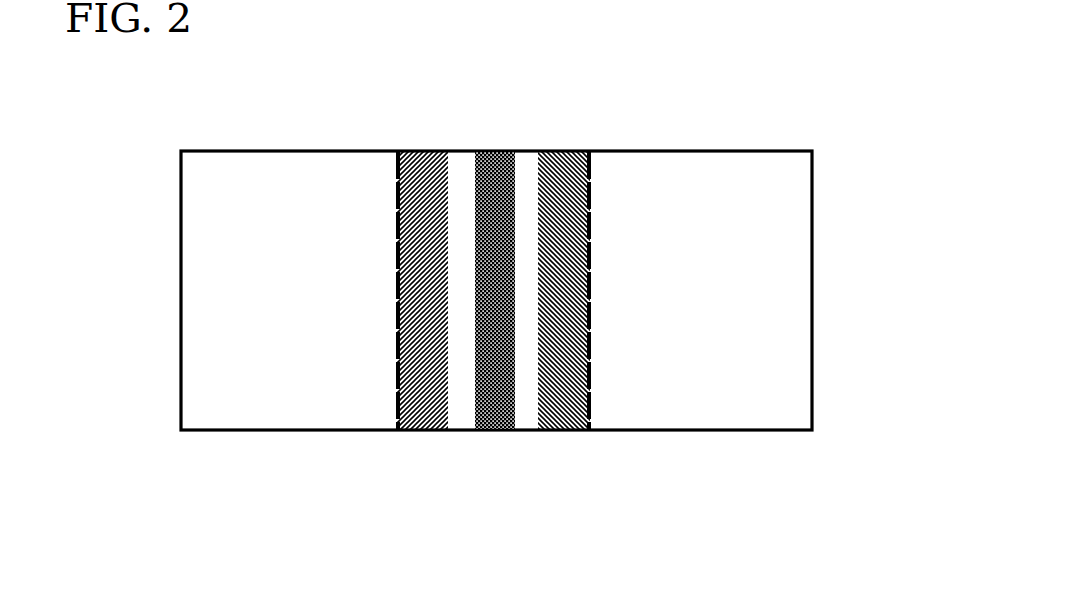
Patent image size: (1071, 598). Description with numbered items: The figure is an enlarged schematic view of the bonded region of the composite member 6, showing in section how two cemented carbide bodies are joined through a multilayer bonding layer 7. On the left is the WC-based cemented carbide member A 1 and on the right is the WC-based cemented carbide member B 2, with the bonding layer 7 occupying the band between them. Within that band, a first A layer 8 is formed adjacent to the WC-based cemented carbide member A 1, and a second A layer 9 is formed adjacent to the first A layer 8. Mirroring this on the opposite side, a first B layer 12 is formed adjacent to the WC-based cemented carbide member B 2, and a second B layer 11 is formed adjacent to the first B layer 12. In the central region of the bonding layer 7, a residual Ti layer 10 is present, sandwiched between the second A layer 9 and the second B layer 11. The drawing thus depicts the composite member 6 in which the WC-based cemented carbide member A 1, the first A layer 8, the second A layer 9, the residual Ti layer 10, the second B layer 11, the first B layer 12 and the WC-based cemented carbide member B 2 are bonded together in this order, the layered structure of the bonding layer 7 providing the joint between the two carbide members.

The WC-based cemented carbide member A 1 is at (333, 183).
The WC-based cemented carbide member B 2 is at (630, 175).
The composite member 6 is at (702, 43).
The bonding layer 7 is at (583, 132).
The first A layer 8 is at (398, 330).
The second A layer 9 is at (467, 393).
The residual Ti layer 10 is at (503, 400).
The second B layer 11 is at (527, 333).
The first B layer 12 is at (563, 298).